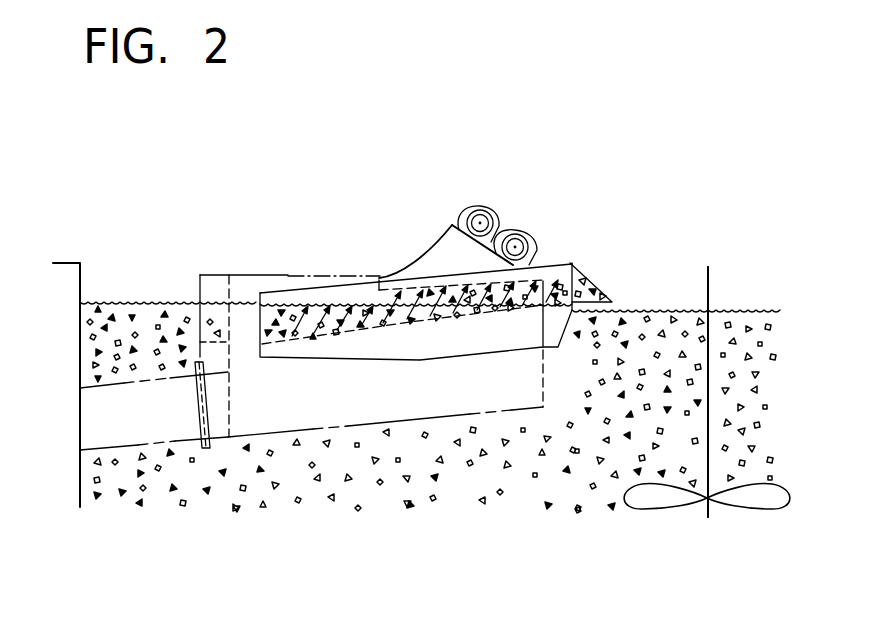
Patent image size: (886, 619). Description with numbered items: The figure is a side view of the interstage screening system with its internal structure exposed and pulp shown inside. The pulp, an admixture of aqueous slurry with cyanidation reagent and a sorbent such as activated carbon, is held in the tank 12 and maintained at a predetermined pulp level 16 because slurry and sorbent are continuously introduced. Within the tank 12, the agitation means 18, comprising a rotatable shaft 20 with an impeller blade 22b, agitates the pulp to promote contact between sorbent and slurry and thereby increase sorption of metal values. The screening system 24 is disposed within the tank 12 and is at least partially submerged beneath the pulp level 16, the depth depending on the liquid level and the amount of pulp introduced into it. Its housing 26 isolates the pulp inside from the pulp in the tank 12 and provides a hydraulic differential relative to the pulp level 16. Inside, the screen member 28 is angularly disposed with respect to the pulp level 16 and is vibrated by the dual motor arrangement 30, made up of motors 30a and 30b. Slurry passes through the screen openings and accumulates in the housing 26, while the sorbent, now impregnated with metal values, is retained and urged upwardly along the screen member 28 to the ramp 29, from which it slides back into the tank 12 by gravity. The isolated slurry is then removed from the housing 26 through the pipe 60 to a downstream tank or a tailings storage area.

The tank 12 is at (79, 340).
The predetermined pulp level 16 is at (115, 302).
The agitation means 18 is at (708, 264).
The rotatable shaft 20 is at (710, 292).
The impeller blade 22b is at (796, 500).
The screening system 24 is at (399, 259).
The housing 26 is at (457, 412).
The screen member 28 is at (424, 330).
The ramp 29 is at (586, 276).
The dual motor arrangement 30 is at (516, 223).
The motor 30a is at (535, 240).
The motor 30b is at (481, 213).
The pipe 60 is at (147, 425).